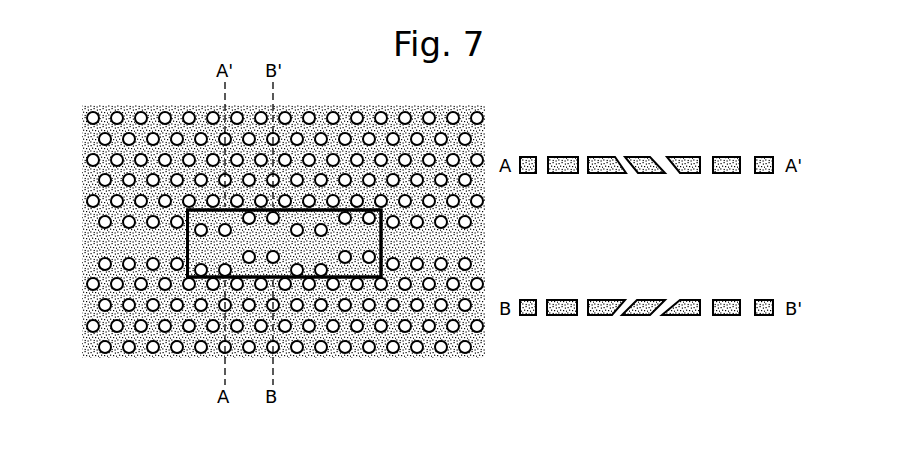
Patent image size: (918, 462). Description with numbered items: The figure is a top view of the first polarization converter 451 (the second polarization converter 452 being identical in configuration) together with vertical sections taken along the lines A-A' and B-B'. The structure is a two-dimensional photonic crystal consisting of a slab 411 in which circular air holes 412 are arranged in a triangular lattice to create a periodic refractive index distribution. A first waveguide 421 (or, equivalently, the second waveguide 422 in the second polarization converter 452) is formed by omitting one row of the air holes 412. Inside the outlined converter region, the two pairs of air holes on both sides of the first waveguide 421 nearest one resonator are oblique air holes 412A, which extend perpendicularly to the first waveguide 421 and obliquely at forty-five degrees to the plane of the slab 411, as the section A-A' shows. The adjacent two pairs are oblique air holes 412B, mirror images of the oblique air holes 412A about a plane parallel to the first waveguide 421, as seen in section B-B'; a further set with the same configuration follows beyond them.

The slab 411 is at (101, 116).
The air holes 412 is at (160, 110).
The oblique air holes 412A is at (225, 232).
The oblique air holes 412B is at (250, 256).
The first waveguide 421 is at (665, 350).
The second waveguide 422 is at (283, 231).
The first polarization converter 451 is at (382, 252).
The second polarization converter 452 is at (285, 243).